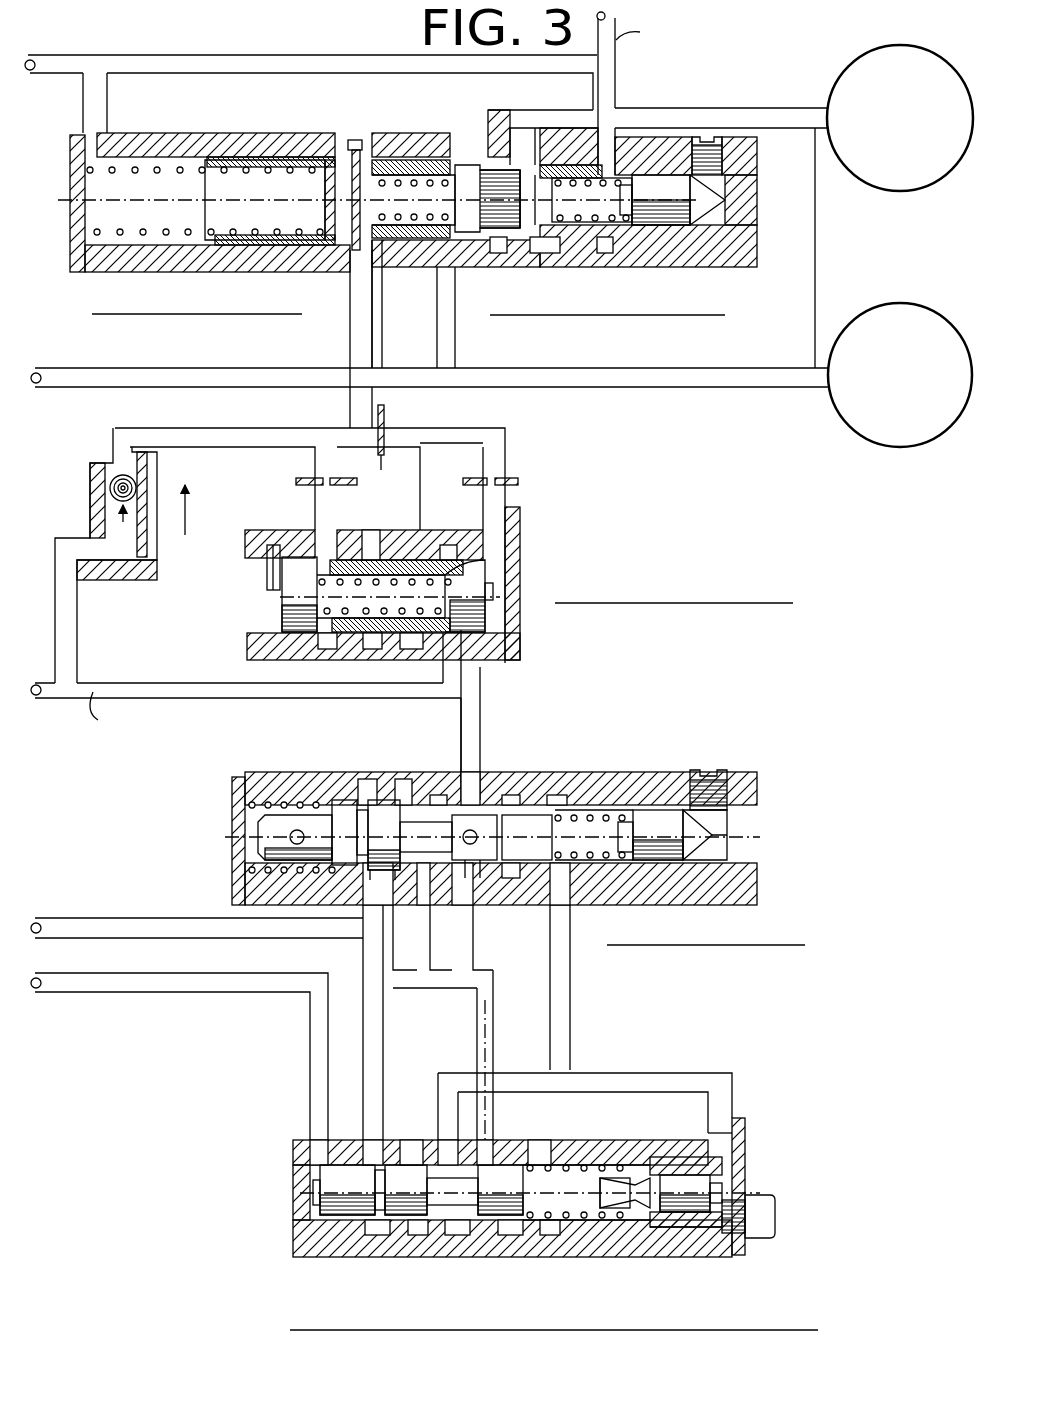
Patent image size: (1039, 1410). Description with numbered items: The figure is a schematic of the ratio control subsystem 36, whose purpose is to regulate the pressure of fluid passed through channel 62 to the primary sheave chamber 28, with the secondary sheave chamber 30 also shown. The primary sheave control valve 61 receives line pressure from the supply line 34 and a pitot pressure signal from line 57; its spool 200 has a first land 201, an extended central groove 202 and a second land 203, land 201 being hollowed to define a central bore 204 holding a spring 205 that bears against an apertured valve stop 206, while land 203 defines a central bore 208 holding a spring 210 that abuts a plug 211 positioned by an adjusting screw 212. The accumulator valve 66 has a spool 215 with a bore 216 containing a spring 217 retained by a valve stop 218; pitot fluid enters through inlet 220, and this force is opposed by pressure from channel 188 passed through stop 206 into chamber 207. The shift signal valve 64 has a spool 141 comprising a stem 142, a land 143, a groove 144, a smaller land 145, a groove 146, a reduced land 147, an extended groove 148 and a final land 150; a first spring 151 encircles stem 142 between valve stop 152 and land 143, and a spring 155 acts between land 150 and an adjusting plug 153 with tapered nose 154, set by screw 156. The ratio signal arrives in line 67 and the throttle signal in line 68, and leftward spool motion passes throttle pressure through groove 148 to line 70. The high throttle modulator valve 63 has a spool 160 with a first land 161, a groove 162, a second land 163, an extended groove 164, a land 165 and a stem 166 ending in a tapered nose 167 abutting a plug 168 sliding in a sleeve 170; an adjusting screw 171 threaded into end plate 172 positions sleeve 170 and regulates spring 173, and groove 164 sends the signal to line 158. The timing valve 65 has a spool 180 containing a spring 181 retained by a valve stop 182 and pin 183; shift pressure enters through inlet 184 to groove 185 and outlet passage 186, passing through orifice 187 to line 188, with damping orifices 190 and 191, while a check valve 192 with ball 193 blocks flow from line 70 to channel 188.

The line 57 is at (213, 62).
The inlet 220 is at (92, 103).
The valve stop 218 is at (76, 245).
The spring 217 is at (145, 232).
The bore 216 is at (290, 238).
The spool 215 is at (240, 157).
The chamber 207 is at (352, 150).
The valve stop 206 is at (355, 140).
The first land 201 is at (405, 160).
The spool 200 is at (457, 155).
The spring 205 is at (440, 200).
The central bore 204 is at (437, 262).
The second land 203 is at (570, 165).
The groove 202 is at (525, 253).
The central bore 208 is at (575, 222).
The spring 210 is at (612, 225).
The plug 211 is at (655, 215).
The adjusting screw 212 is at (722, 160).
The channel 62 is at (760, 112).
The primary sheave chamber 28 is at (840, 72).
The secondary sheave chamber 30 is at (845, 332).
The supply line 34 is at (593, 385).
The line 188 is at (374, 342).
The orifice 187 is at (390, 420).
The orifice 191 is at (322, 478).
The orifice 190 is at (490, 487).
The outlet passage 186 is at (412, 511).
The valve stop 182 is at (297, 560).
The pin 183 is at (267, 585).
The spring 181 is at (340, 612).
The groove 185 is at (370, 654).
The spool 180 is at (478, 632).
The inlet 184 is at (462, 690).
The ball 193 is at (115, 478).
The check valve 192 is at (118, 510).
The line 70 is at (482, 737).
The final land 150 is at (540, 812).
The first spring 151 is at (280, 800).
The land 143 is at (345, 805).
The groove 144 is at (362, 790).
The spool 141 is at (385, 790).
The groove 146 is at (438, 815).
The land 147 is at (480, 812).
The spring 155 is at (605, 812).
The screw 156 is at (727, 790).
The tapered nose 154 is at (730, 848).
The adjusting plug 153 is at (660, 845).
The valve stop 152 is at (232, 813).
The extended groove 148 is at (478, 880).
The stem 142 is at (280, 858).
The land 145 is at (377, 872).
The line 67 is at (105, 920).
The line 68 is at (218, 995).
The line 158 is at (571, 1015).
The spool 160 is at (383, 1192).
The stem 166 is at (580, 1175).
The spring 173 is at (625, 1165).
The end plate 172 is at (745, 1135).
The plug 168 is at (710, 1180).
The adjusting screw 171 is at (775, 1215).
The tapered nose portion 167 is at (612, 1210).
The sleeve 170 is at (690, 1228).
The first land 161 is at (320, 1180).
The groove 162 is at (380, 1212).
The second land 163 is at (410, 1212).
The extended groove 164 is at (450, 1208).
The land 165 is at (505, 1212).
The accumulator valve 66 is at (357, 214).
The primary sheave control valve 61 is at (588, 223).
The timing valve 65 is at (405, 540).
The shift signal valve 64 is at (492, 845).
The high throttle modulator valve 63 is at (537, 1209).
The ratio control subsystem 36 is at (845, 1382).